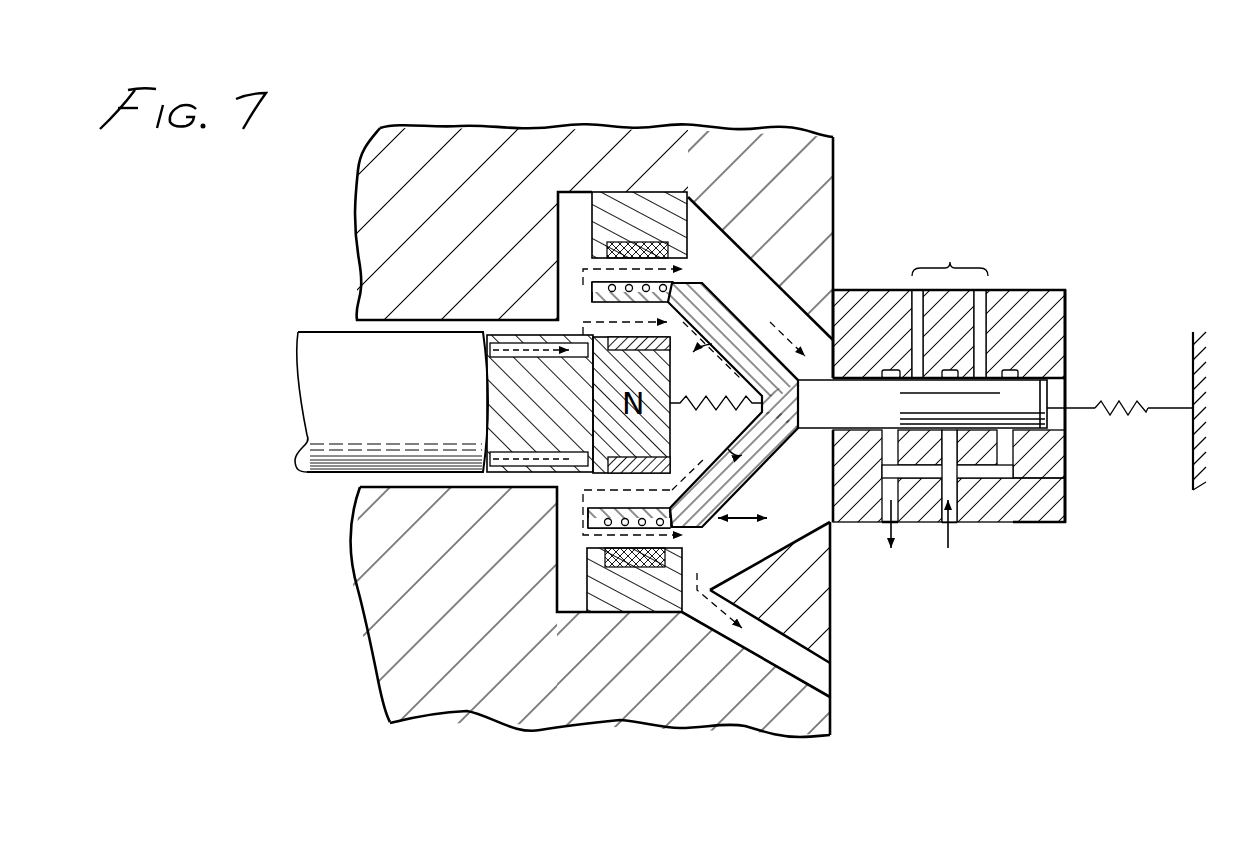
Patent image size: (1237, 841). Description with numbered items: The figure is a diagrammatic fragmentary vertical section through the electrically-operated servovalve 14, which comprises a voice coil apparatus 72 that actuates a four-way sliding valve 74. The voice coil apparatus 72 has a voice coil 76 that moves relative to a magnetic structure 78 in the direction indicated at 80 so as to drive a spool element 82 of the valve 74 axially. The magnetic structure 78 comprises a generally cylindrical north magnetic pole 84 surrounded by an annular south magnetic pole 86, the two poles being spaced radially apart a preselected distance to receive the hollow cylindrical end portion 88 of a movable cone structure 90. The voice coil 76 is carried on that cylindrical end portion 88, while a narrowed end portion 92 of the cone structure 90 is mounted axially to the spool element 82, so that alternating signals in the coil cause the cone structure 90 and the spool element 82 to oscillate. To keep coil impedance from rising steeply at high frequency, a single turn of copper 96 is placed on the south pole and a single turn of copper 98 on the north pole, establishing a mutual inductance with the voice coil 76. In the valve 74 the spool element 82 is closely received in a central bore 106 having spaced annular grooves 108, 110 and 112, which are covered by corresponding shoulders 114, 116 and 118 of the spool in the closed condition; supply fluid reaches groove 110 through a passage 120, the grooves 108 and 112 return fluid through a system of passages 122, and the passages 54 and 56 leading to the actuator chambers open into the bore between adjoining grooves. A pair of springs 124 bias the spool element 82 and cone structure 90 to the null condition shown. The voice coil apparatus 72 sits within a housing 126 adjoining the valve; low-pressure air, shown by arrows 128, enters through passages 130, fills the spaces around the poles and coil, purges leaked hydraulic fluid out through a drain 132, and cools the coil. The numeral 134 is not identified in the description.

The servovalve 14 is at (753, 73).
The passage 54 is at (915, 292).
The passage 56 is at (988, 292).
The voice coil apparatus 72 is at (626, 411).
The four-way sliding valve 74 is at (976, 413).
The voice coil 76 is at (733, 313).
The magnetic structure 78 is at (703, 298).
The direction of movement 80 is at (747, 507).
The spool element 82 is at (1027, 400).
The north magnetic pole 84 is at (612, 378).
The south magnetic pole 86 is at (608, 202).
The hollow cylindrical end portion 88 is at (593, 292).
The movable cone structure 90 is at (788, 400).
The narrowed end portion 92 is at (812, 310).
The single turn of copper 96 is at (655, 242).
The single turn of copper 98 is at (545, 411).
The central bore 106 is at (1048, 386).
The annular groove 108 is at (873, 373).
The annular groove 110 is at (943, 370).
The annular groove 112 is at (1025, 370).
The shoulder 114 is at (875, 430).
The shoulder 116 is at (943, 437).
The shoulder 118 is at (1013, 433).
The passage 120 is at (950, 487).
The system of passages 122 is at (880, 500).
The springs 124 is at (712, 410).
The housing 126 is at (440, 172).
The arrows 128 is at (763, 318).
The passages 130 is at (500, 345).
The drain 132 is at (810, 688).
The magnetic flux path 134 is at (728, 347).